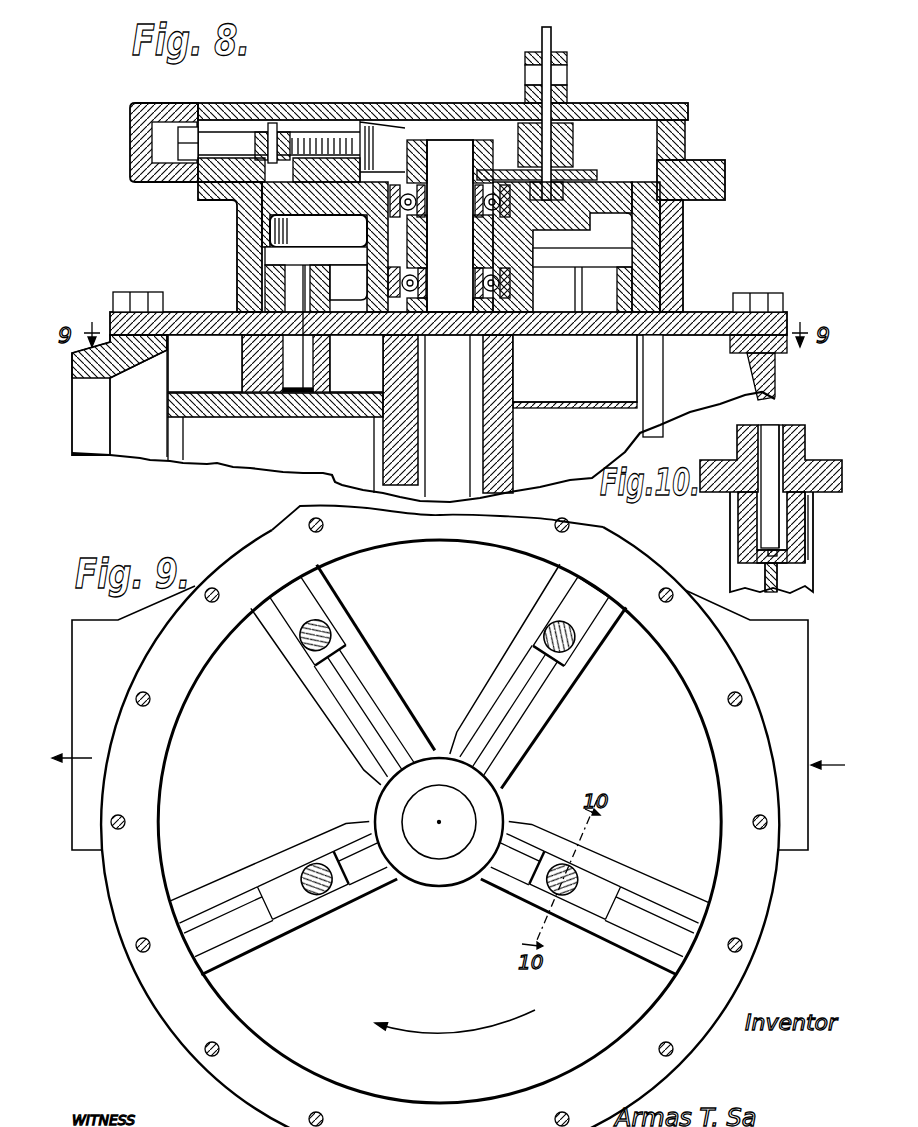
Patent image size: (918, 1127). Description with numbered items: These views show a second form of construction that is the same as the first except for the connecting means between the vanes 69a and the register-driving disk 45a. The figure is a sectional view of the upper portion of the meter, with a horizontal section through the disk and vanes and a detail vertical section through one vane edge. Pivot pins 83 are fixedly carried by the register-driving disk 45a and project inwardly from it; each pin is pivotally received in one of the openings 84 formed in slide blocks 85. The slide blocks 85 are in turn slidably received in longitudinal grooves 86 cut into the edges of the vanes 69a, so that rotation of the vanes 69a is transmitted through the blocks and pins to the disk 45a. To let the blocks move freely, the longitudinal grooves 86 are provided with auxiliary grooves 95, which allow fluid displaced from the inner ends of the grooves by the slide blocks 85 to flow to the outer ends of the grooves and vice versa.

In FIG. 8, the pivot pins 83 is at (303, 353).
In FIG. 10, the pivot pins 83 is at (768, 513).
In FIG. 9, the pivot pins 83 is at (328, 623).
In FIG. 8, the openings 84 is at (312, 380).
In FIG. 10, the openings 84 is at (808, 510).
In FIG. 9, the openings 84 is at (330, 647).
In FIG. 8, the slide blocks 85 is at (258, 350).
In FIG. 10, the slide blocks 85 is at (800, 550).
In FIG. 9, the slide blocks 85 is at (295, 611).
In FIG. 8, the longitudinal grooves 86 is at (182, 372).
In FIG. 10, the longitudinal grooves 86 is at (745, 534).
In FIG. 9, the longitudinal grooves 86 is at (355, 715).
In FIG. 8, the auxiliary grooves 95 is at (232, 395).
In FIG. 9, the auxiliary grooves 95 is at (340, 681).
In FIG. 8, the vanes 69a is at (250, 458).
In FIG. 10, the vanes 69a is at (778, 577).
In FIG. 9, the vanes 69a is at (488, 682).
In FIG. 8, the register-driving disk 45a is at (575, 371).
In FIG. 10, the register-driving disk 45a is at (724, 460).